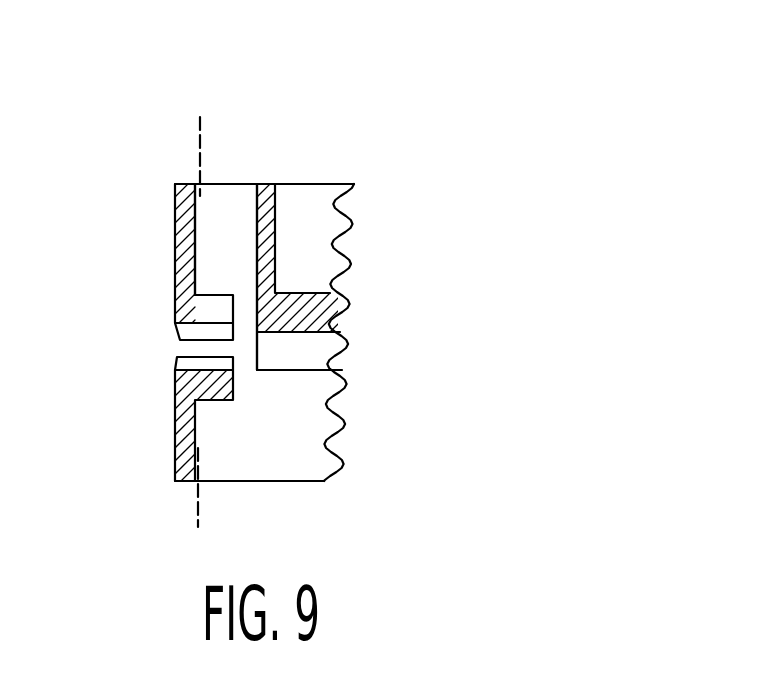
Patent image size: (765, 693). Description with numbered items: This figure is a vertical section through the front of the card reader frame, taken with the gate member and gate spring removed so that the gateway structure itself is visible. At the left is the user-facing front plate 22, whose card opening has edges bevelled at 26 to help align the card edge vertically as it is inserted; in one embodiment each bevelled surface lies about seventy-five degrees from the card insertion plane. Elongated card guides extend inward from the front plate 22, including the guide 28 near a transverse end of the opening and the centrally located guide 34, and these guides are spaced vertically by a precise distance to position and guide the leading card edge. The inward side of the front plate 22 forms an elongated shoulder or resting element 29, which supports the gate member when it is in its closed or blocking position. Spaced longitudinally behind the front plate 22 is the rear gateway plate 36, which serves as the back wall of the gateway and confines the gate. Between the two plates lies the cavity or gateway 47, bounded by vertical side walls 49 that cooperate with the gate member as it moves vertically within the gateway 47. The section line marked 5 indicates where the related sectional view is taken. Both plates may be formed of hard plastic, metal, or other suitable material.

The front plate 22 is at (180, 200).
The vertical side walls 49 is at (228, 226).
The gateway 47 is at (232, 192).
The rear gateway plate 36 is at (267, 195).
The shoulder 29 is at (212, 309).
The card guide 34 is at (225, 342).
The bevelled edges 26 is at (190, 363).
The card guide 28 is at (187, 437).
The section line 5- 5 is at (202, 109).